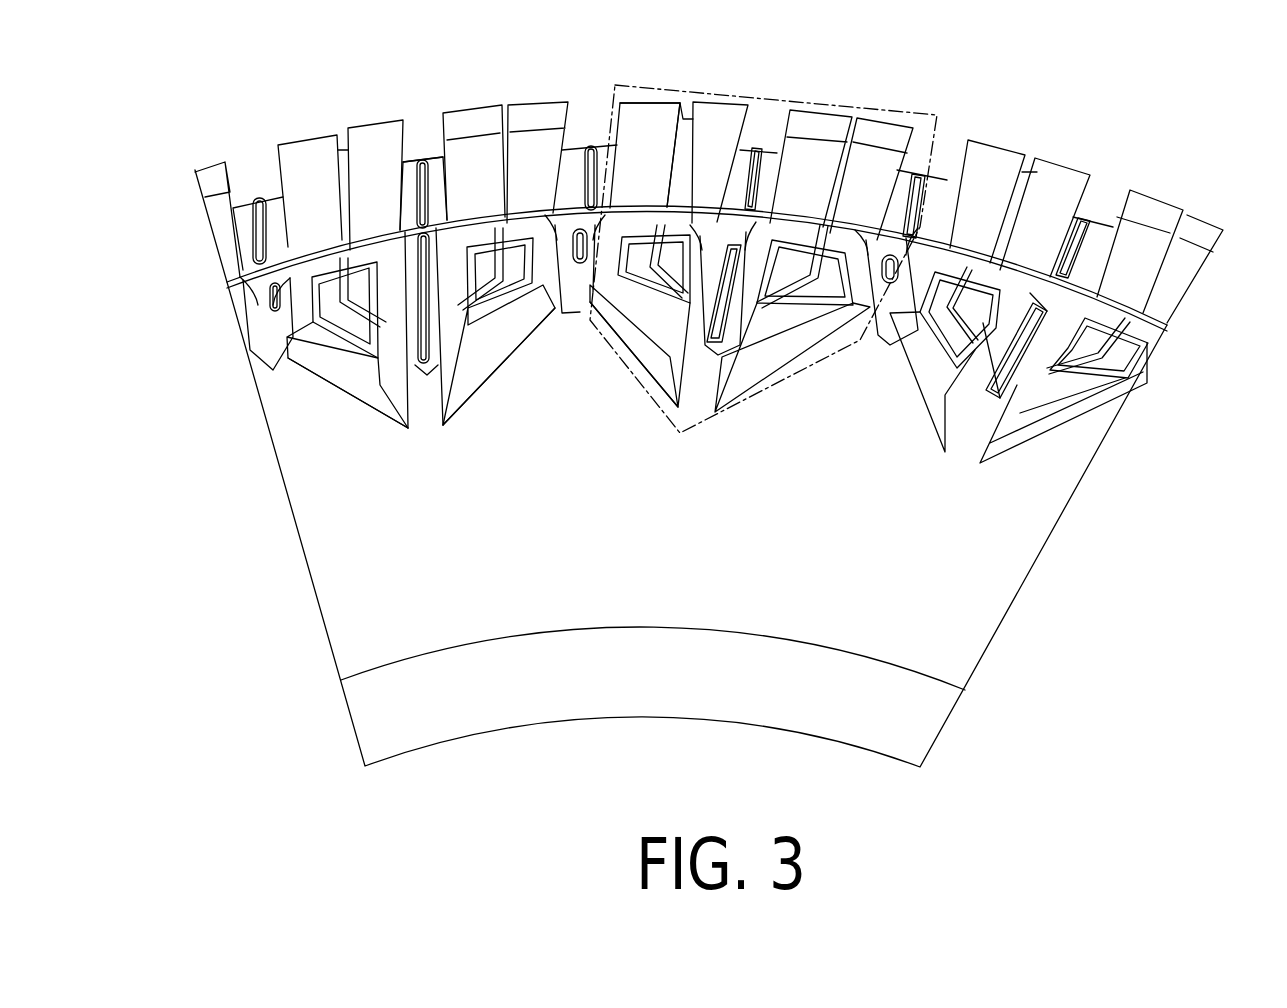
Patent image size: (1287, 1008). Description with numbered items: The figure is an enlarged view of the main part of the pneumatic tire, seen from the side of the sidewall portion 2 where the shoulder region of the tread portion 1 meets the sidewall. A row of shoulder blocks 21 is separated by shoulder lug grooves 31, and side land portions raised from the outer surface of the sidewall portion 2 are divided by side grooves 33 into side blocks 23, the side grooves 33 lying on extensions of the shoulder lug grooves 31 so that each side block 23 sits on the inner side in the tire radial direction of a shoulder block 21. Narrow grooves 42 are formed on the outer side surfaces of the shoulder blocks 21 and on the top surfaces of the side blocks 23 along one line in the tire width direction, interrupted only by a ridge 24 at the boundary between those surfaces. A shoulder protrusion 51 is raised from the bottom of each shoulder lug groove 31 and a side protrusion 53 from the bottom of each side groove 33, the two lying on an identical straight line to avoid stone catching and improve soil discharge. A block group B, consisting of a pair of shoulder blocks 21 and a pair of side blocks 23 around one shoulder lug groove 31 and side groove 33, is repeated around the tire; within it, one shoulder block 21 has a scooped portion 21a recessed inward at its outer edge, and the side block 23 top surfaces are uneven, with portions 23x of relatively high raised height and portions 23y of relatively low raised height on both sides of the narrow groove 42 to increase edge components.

The tread portion 1 is at (1005, 118).
The sidewall portion 2 is at (1018, 556).
The shoulder block 21 is at (375, 120).
The scooped portion 21a is at (600, 118).
The side block 23 is at (795, 355).
The portion with relatively high raised height 23x is at (365, 332).
The portion with relatively low raised height 23y is at (325, 348).
The ridge 24 is at (1170, 327).
The shoulder lug groove 31 is at (441, 148).
The side groove 33 is at (878, 335).
The narrow groove 42 is at (335, 130).
The shoulder protrusion 51 is at (423, 165).
The side protrusion 53 is at (580, 266).
The block group B is at (850, 100).